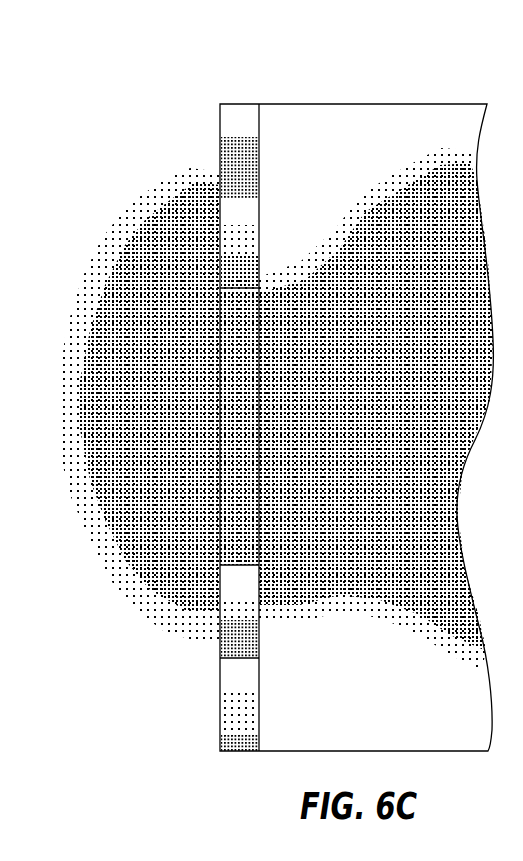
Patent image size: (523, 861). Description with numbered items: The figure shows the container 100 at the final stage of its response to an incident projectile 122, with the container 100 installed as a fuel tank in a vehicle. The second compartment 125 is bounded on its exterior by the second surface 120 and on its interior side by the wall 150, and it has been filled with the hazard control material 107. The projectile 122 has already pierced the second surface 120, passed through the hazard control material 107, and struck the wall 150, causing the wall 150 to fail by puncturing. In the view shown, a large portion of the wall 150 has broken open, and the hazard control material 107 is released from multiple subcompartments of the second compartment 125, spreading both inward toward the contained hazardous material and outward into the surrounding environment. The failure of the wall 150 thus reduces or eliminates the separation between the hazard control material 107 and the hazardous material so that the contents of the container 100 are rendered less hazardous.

The container 100 is at (378, 51).
The hazard control material 107 is at (222, 327).
The second surface 120 is at (220, 538).
The projectile 122 is at (402, 510).
The second compartment 125 is at (240, 130).
The wall 150 is at (262, 212).